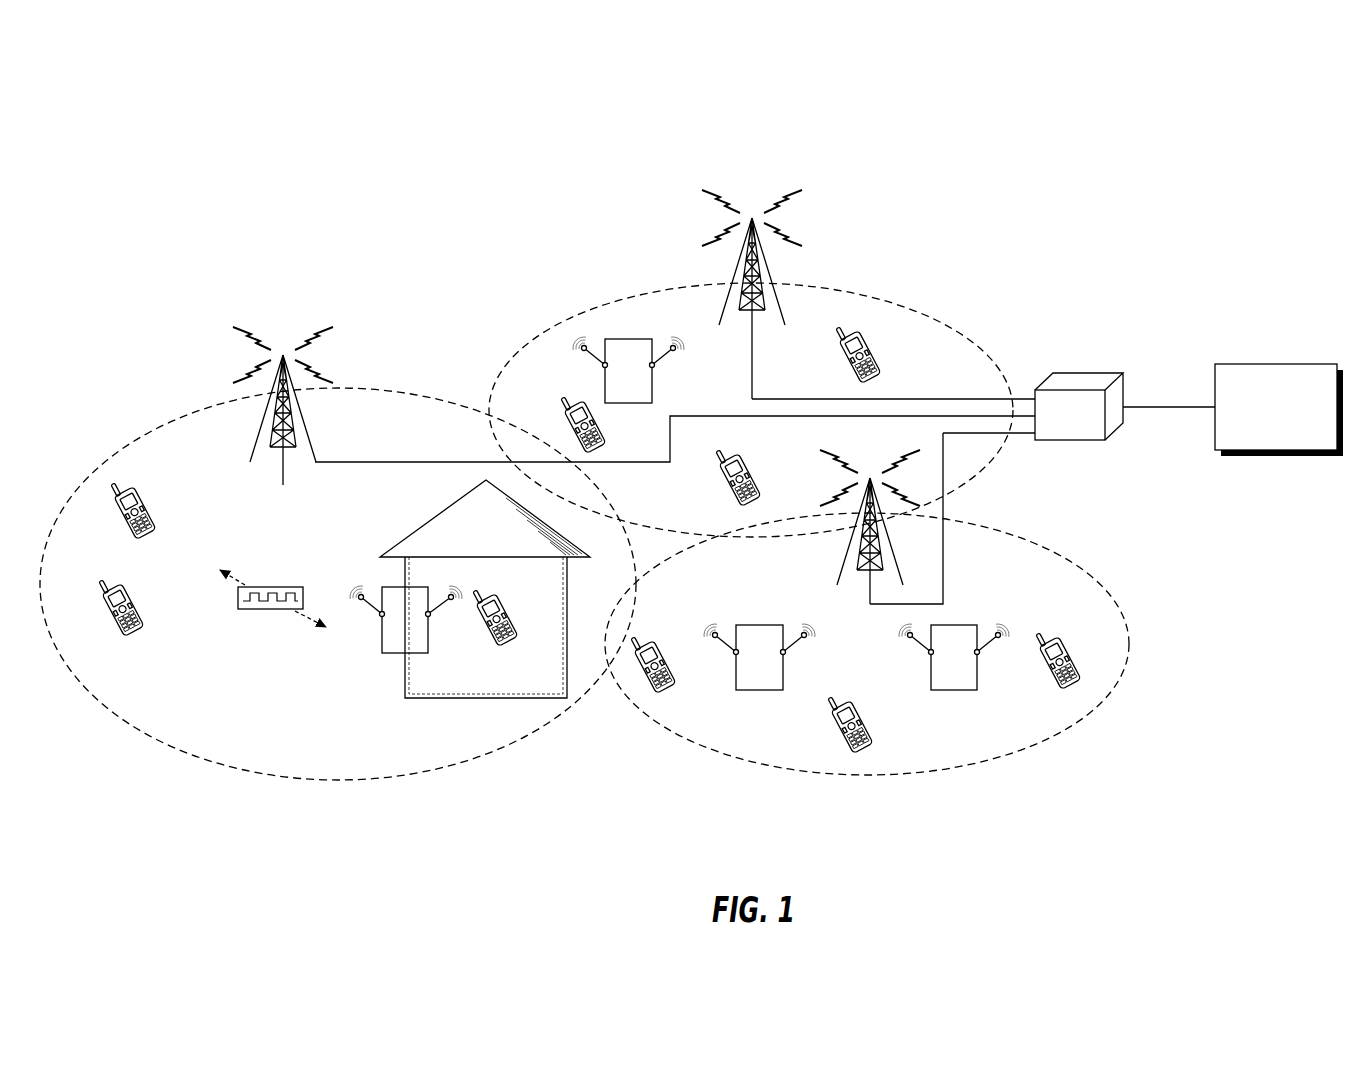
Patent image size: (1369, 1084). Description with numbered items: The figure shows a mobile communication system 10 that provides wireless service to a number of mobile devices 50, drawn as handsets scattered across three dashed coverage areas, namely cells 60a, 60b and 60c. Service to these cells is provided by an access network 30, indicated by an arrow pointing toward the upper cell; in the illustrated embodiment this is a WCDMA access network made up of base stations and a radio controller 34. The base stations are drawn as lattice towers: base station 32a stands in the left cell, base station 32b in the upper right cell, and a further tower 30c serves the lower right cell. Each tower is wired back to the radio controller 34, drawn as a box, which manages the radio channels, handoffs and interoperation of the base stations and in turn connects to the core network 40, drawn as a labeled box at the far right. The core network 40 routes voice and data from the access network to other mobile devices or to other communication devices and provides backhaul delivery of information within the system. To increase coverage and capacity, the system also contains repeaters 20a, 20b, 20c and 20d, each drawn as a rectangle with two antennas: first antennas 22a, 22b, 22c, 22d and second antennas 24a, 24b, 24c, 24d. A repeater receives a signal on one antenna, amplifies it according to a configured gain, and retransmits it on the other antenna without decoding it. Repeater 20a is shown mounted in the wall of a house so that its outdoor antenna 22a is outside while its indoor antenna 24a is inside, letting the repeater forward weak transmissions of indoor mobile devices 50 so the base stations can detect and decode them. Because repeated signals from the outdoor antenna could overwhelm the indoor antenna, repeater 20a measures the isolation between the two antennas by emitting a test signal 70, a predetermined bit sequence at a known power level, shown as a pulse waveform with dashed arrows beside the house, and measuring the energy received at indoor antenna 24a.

The mobile communication system 10 is at (220, 150).
The repeater 20a is at (403, 619).
The repeater 20b is at (628, 335).
The repeater 20c is at (769, 652).
The repeater 20d is at (955, 651).
The first antenna (outdoor antenna) 22a is at (377, 607).
The first antenna 22b is at (595, 358).
The first antenna 22c is at (725, 648).
The first antenna 22d is at (918, 648).
The second antenna (indoor antenna) 24a is at (440, 607).
The second antenna 24b is at (662, 358).
The second antenna 24c is at (792, 642).
The second antenna 24d is at (990, 650).
The access network 30 is at (495, 332).
The base station 30c is at (843, 555).
The base station 32a is at (312, 433).
The base station 32b is at (770, 275).
The radio controller 34 is at (1083, 373).
The core network 40 is at (1277, 364).
The mobile device 50 is at (143, 500).
The cell 60a is at (153, 432).
The cell 60b is at (717, 285).
The cell 60c is at (1065, 558).
The test signal 70 is at (258, 609).